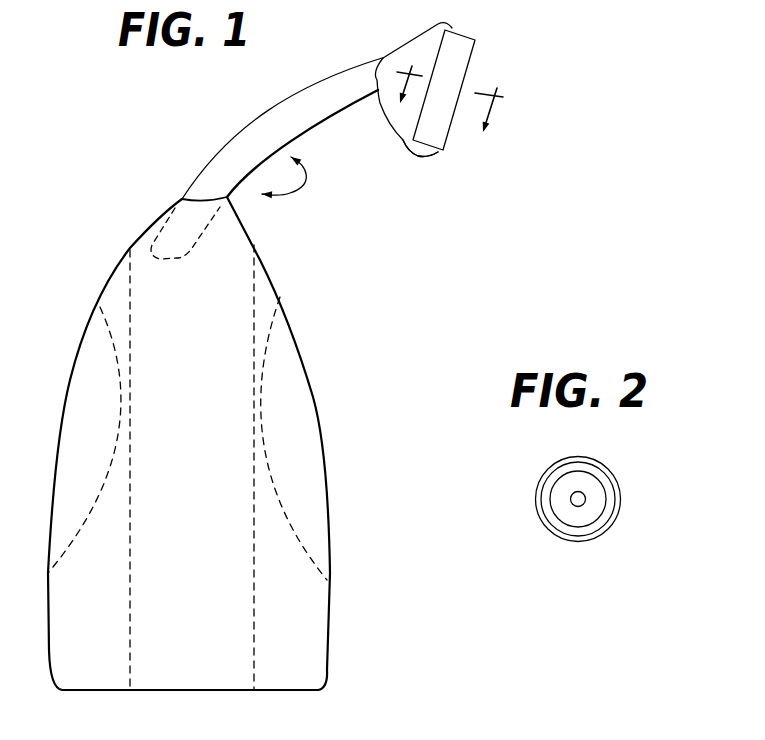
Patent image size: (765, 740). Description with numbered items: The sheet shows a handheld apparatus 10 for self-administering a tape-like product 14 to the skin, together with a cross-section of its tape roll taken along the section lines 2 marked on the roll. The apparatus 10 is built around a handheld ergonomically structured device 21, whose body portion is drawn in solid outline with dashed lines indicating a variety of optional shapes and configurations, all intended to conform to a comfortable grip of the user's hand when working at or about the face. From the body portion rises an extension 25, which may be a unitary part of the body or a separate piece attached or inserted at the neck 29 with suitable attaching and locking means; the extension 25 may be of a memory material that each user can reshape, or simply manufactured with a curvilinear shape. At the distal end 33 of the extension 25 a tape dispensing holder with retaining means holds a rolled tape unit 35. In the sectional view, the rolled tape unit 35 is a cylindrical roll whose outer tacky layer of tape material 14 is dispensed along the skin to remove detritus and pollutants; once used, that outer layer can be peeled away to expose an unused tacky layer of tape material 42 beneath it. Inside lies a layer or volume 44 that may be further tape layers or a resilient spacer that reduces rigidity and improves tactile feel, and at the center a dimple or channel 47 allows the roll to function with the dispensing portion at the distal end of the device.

In FIG. 1, the handheld apparatus 10 is at (122, 242).
In FIG. 1, the tape-like product 14 is at (460, 50).
In FIG. 2, the tape-like product 14 is at (615, 485).
In FIG. 1, the handheld ergonomically structured device 21 is at (250, 232).
In FIG. 1, the extension 25 is at (253, 133).
In FIG. 1, the neck 29 is at (192, 193).
In FIG. 1, the distal end 33 is at (416, 168).
In FIG. 1, the rolled tape unit 35 is at (450, 133).
In FIG. 2, the rolled tape unit 35 is at (530, 466).
In FIG. 1, the section lines 2- 2 is at (452, 87).
In FIG. 2, the unused tacky layer of tape material 42 is at (612, 513).
In FIG. 2, the layer or volume 44 is at (588, 515).
In FIG. 2, the dimple or channel 47 is at (573, 505).